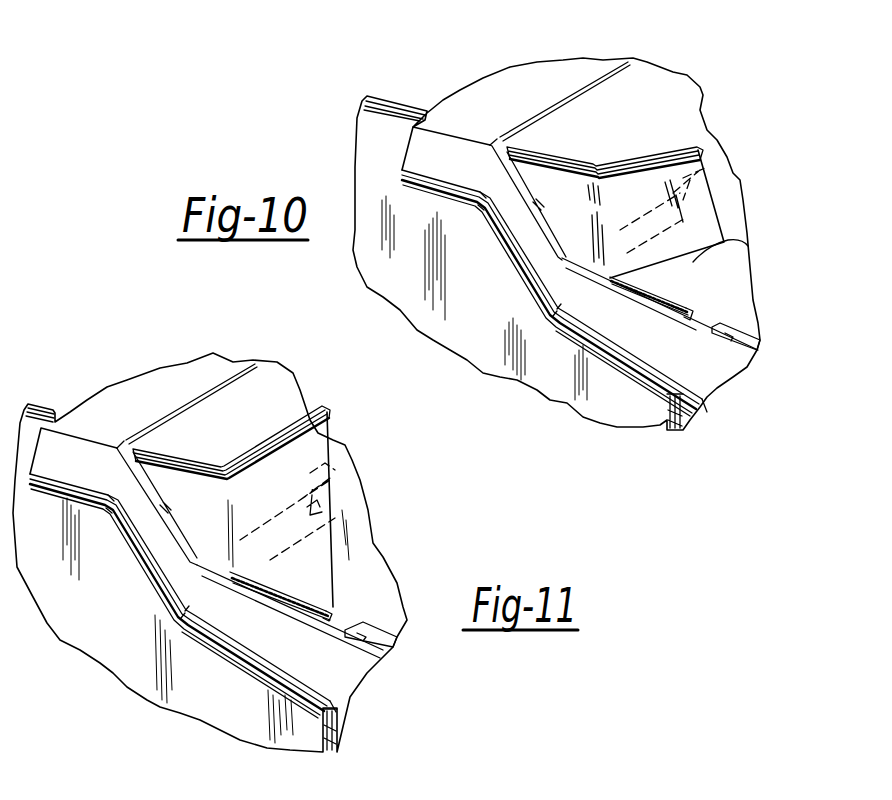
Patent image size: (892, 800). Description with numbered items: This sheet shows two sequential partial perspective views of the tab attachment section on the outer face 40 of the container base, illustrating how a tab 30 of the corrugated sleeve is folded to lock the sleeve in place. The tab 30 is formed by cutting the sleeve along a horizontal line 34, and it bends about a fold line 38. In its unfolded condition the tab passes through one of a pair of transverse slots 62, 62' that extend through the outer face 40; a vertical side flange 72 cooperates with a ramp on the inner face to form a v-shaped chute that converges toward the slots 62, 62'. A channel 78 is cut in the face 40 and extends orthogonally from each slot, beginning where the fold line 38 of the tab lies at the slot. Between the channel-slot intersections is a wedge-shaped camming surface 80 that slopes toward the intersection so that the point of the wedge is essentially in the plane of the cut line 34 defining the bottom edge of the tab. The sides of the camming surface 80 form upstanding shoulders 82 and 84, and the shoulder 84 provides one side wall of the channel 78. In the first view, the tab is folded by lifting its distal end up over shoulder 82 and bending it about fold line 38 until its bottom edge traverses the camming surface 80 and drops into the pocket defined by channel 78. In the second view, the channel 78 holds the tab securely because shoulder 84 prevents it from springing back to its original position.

In FIG. 10, the tab 30 is at (655, 180).
In FIG. 11, the tab 30 is at (307, 443).
In FIG. 10, the horizontal line 34 is at (740, 232).
In FIG. 10, the fold line 38 is at (601, 176).
In FIG. 11, the fold line 38 is at (225, 497).
In FIG. 10, the outer face 40 is at (528, 95).
In FIG. 11, the outer face 40 is at (152, 393).
In FIG. 10, the transverse slot 62 is at (599, 350).
In FIG. 11, the transverse slot 62 is at (220, 596).
In FIG. 10, the transverse slot 62' is at (758, 309).
In FIG. 11, the transverse slot 62' is at (397, 603).
In FIG. 10, the vertical side flange 72 is at (667, 357).
In FIG. 11, the vertical side flange 72 is at (263, 632).
In FIG. 10, the channel 78 is at (713, 150).
In FIG. 11, the channel 78 is at (343, 450).
In FIG. 10, the camming surface 80 is at (698, 257).
In FIG. 11, the camming surface 80 is at (298, 580).
In FIG. 10, the shoulder 82 is at (687, 303).
In FIG. 11, the shoulder 82 is at (313, 603).
In FIG. 11, the shoulder 84 is at (307, 507).